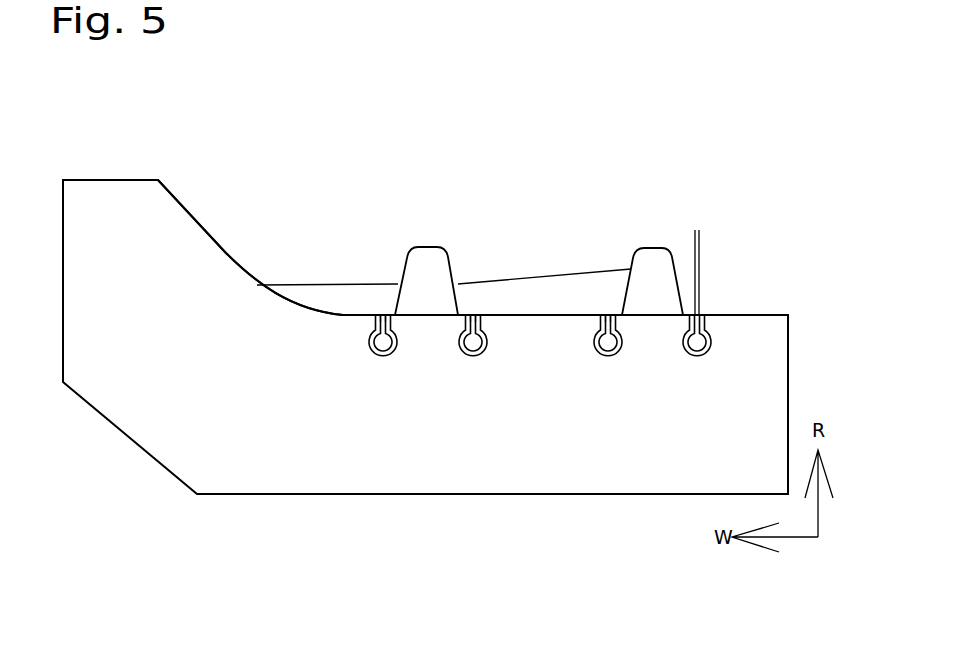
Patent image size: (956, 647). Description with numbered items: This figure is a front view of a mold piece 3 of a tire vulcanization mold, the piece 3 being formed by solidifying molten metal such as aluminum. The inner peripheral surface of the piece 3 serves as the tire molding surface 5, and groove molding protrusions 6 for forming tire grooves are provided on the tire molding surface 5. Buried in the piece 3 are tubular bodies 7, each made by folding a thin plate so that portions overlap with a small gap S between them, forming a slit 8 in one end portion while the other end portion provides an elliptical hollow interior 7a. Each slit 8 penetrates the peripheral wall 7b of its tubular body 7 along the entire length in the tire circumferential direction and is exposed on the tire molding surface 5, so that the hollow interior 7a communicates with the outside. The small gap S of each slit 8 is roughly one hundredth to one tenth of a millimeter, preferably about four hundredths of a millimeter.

The piece 3 is at (107, 178).
The tire molding surface 5 is at (200, 232).
The groove molding protrusion 6 is at (310, 293).
The tubular body 7 is at (501, 383).
The hollow interior 7a is at (472, 348).
The peripheral wall 7b is at (368, 345).
The slit 8 is at (388, 300).
The small gap S is at (665, 238).